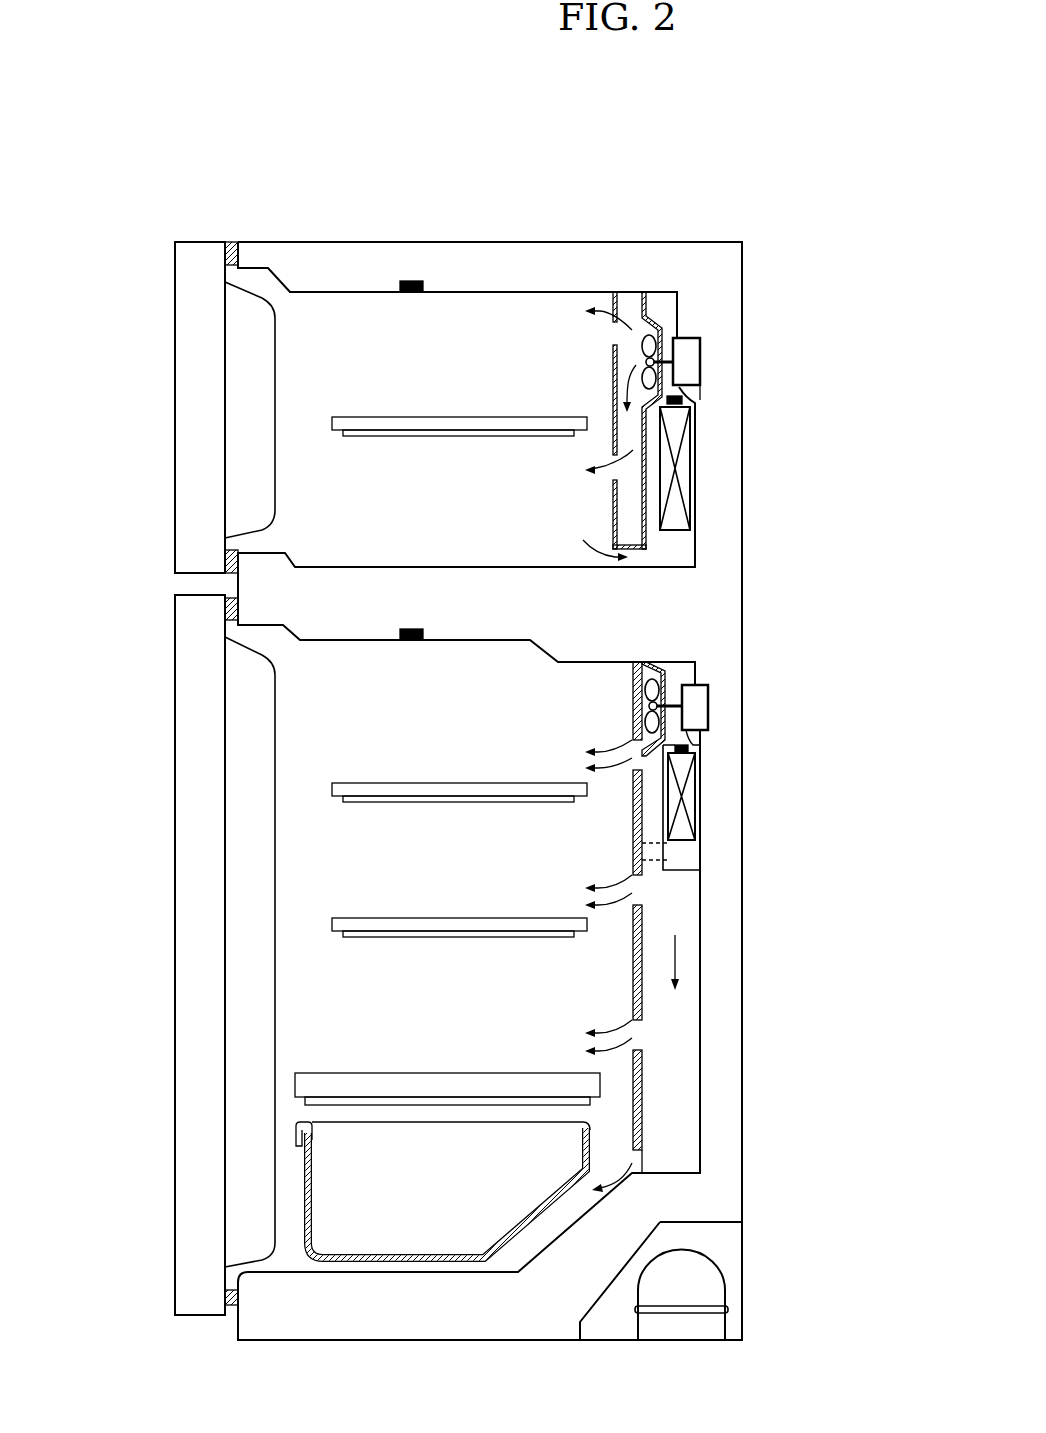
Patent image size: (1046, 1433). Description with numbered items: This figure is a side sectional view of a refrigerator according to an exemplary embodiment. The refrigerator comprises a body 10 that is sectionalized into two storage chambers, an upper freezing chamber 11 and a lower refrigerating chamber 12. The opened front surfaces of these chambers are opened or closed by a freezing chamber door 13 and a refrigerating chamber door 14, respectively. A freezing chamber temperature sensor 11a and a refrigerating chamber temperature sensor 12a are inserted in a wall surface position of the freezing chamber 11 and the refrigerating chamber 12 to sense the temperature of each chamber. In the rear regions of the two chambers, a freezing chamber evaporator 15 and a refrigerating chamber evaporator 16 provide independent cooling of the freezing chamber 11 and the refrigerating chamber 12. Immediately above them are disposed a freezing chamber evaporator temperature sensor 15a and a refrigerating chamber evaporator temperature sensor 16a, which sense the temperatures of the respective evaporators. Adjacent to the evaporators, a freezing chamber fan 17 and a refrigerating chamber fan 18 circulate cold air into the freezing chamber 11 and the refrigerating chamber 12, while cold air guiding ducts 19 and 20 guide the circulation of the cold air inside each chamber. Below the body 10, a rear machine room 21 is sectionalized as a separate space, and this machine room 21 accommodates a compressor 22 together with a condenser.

The body 10 is at (735, 193).
The freezing chamber 11 is at (402, 514).
The freezing chamber temperature sensor 11a is at (409, 293).
The refrigerating chamber 12 is at (412, 874).
The refrigerating chamber temperature sensor 12a is at (409, 641).
The freezing chamber door 13 is at (188, 439).
The refrigerating chamber door 14 is at (192, 912).
The freezing chamber evaporator 15 is at (683, 455).
The freezing chamber evaporator temperature sensor 15a is at (698, 399).
The refrigerating chamber evaporator 16 is at (690, 793).
The refrigerating chamber evaporator temperature sensor 16a is at (690, 748).
The freezing chamber fan 17 is at (662, 330).
The refrigerating chamber fan 18 is at (670, 672).
The cold air guiding duct 19 is at (613, 393).
The cold air guiding duct 20 is at (636, 826).
The machine room 21 is at (715, 1240).
The compressor 22 is at (712, 1288).